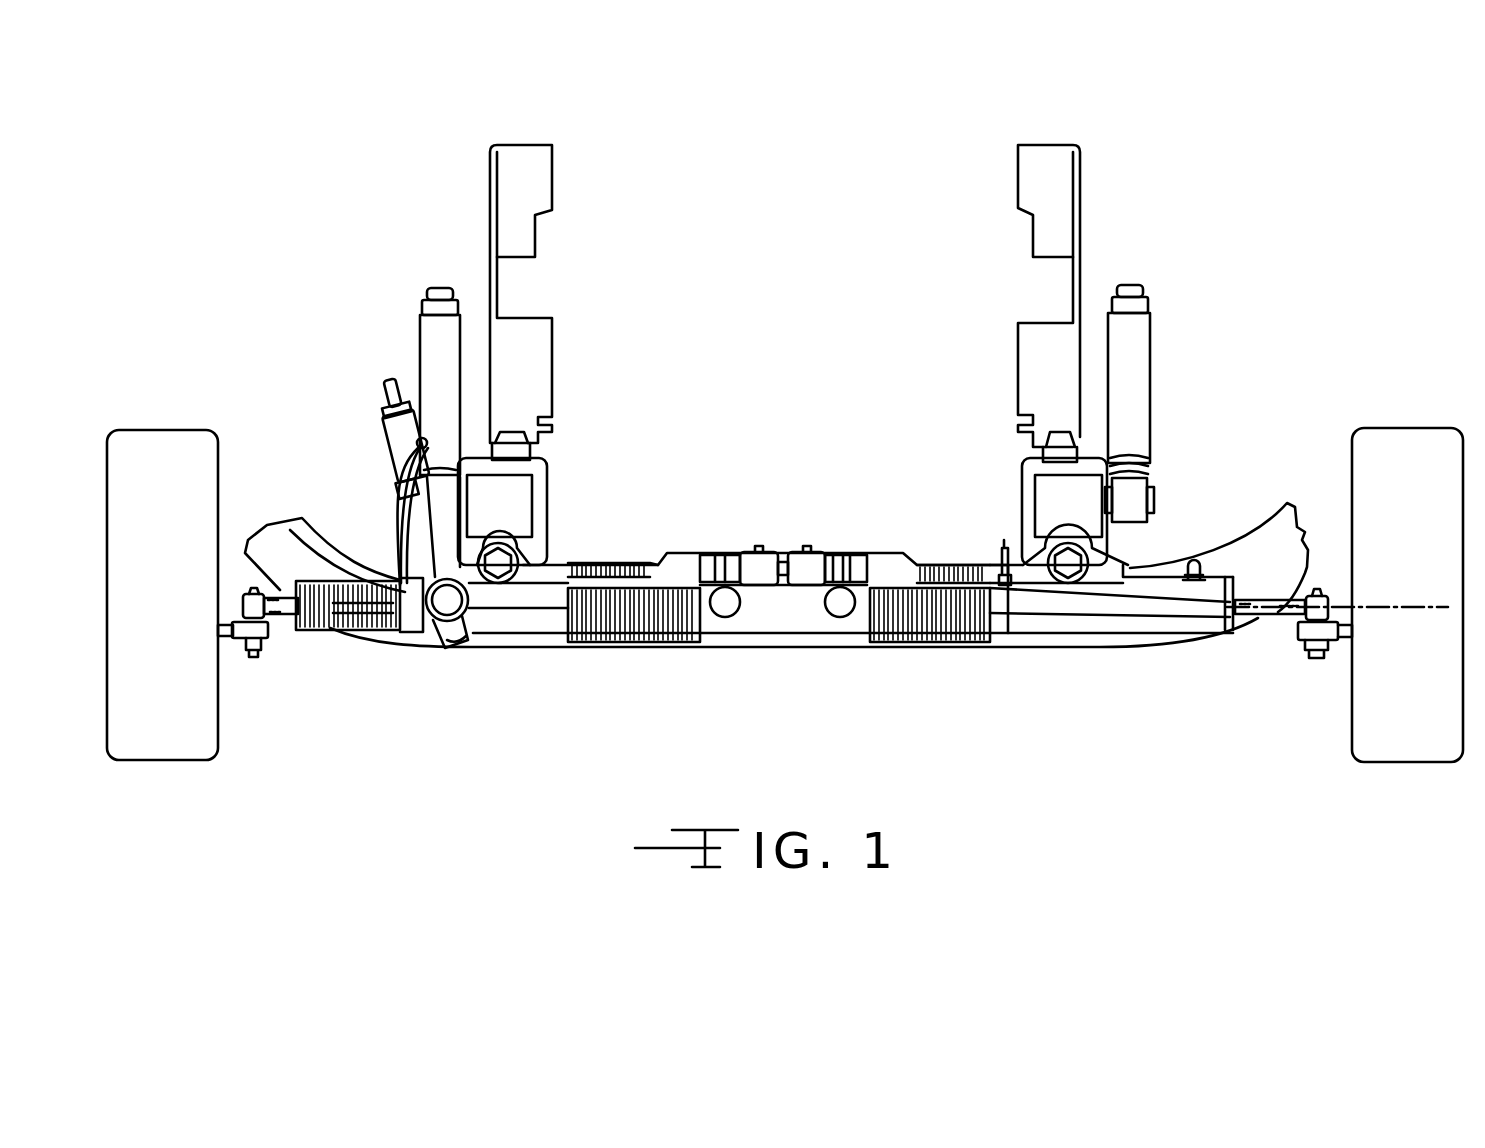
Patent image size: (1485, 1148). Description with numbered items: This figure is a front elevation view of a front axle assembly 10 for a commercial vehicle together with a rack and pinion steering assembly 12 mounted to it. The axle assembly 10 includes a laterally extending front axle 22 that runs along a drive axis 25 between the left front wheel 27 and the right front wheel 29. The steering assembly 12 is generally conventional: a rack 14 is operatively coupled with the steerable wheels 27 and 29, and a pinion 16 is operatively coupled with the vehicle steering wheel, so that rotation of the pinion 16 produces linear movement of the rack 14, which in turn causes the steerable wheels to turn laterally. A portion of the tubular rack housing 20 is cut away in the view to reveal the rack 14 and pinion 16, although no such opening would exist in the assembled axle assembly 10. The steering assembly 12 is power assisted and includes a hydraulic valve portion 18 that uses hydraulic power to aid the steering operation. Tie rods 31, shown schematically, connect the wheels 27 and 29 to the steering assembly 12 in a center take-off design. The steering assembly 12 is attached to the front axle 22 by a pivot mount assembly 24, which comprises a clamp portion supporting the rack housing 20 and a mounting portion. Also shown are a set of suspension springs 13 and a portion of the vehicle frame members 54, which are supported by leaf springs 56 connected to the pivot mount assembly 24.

The axle assembly 10 is at (847, 273).
The rack and pinion steering assembly 12 is at (702, 502).
The suspension springs 13 is at (433, 340).
The rack 14 is at (433, 628).
The pinion 16 is at (403, 528).
The hydraulic valve portion 18 is at (392, 473).
The rack housing 20 is at (493, 637).
The front axle 22 is at (1250, 620).
The pivot mount assembly 24 is at (1003, 537).
The drive axis 25 is at (1423, 608).
The left front wheel 27 is at (1400, 428).
The right front wheel 29 is at (150, 430).
The tie rods 31 is at (273, 618).
The vehicle frame members 54 is at (552, 370).
The leaf springs 56 is at (520, 505).